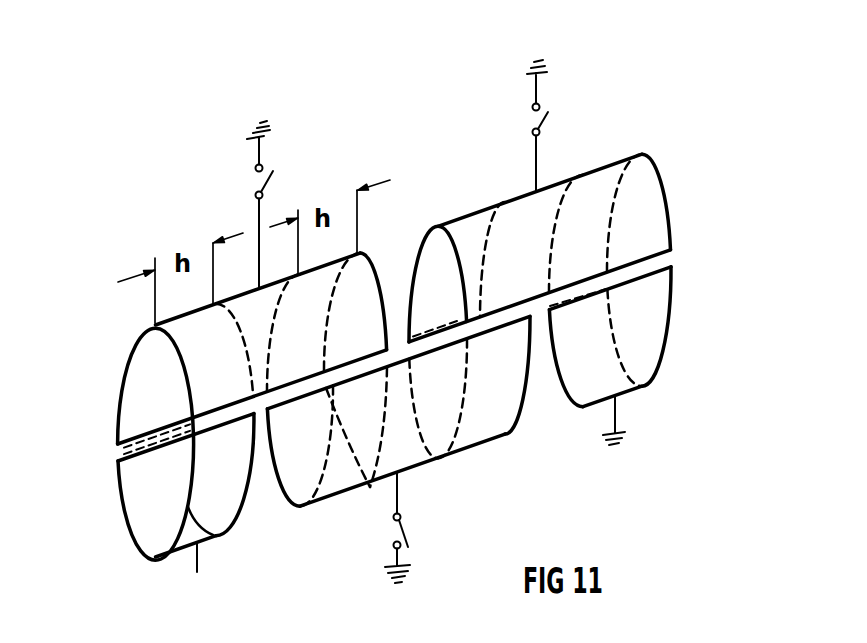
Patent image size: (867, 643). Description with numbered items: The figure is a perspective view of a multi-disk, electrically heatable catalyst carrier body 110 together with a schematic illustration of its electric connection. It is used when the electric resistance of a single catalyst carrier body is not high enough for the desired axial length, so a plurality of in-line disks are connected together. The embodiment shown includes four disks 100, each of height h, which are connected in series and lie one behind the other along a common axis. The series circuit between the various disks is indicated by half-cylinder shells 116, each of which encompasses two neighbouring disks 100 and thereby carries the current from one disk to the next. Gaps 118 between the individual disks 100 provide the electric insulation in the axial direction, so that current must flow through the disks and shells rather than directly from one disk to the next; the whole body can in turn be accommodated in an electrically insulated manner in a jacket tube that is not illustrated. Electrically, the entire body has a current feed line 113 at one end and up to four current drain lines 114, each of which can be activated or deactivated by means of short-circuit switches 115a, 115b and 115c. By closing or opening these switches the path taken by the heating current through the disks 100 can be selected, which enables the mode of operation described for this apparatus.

The disk 100 is at (135, 413).
The segmented tubular electrode 110 is at (360, 351).
The current feed line 113 is at (197, 558).
The current drain line 114 is at (256, 147).
The short-circuit switch 115a is at (274, 172).
The short-circuit switch 115b is at (407, 533).
The short-circuit switch 115c is at (548, 112).
The half-cylinder shell 116 is at (247, 283).
The gap 118 is at (400, 285).